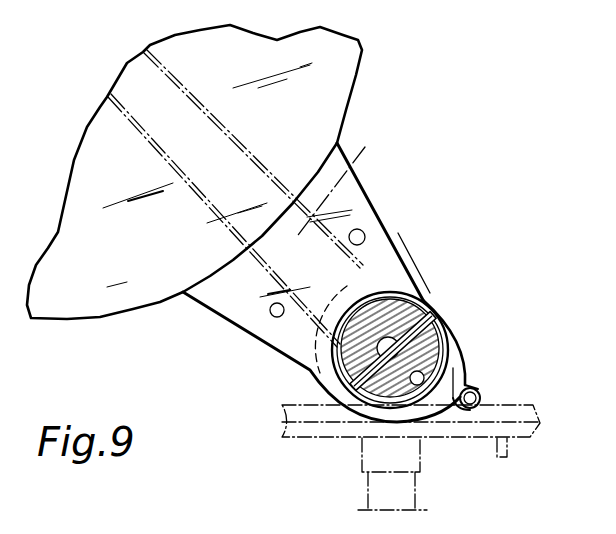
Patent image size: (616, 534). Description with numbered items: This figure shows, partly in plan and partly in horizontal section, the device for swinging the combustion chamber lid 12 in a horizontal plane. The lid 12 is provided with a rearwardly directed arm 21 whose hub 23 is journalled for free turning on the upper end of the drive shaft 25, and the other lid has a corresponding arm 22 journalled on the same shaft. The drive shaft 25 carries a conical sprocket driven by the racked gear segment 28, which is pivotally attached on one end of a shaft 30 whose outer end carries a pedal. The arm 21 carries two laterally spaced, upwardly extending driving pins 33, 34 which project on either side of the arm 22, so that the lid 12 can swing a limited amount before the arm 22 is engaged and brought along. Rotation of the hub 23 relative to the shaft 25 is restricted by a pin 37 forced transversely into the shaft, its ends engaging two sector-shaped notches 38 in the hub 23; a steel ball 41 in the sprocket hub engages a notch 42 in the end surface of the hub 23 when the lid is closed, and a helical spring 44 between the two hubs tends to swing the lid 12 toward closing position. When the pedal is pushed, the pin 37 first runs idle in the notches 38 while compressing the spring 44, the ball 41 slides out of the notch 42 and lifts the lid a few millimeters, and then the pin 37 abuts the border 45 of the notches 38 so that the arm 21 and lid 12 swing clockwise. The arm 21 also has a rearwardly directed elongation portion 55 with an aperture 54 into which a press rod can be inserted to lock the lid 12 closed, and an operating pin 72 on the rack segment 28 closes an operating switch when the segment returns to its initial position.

The combustion chamber lid 12 is at (72, 302).
The arm 21 is at (212, 293).
The arm 22 is at (364, 209).
The hub 23 is at (453, 343).
The drive shaft 25 is at (333, 360).
The racked gear segment 28 is at (547, 423).
The shaft 30 is at (403, 495).
The driving pin 33 is at (272, 317).
The driving pin 34 is at (363, 228).
The pin 37 is at (441, 322).
The sector-shaped notches 38 is at (430, 306).
The steel ball 41 is at (423, 386).
The notch 42 is at (470, 350).
The helical spring 44 is at (410, 290).
The border 45 is at (338, 380).
The aperture 54 is at (476, 394).
The elongation portion 55 is at (483, 404).
The operating pin 72 is at (507, 457).